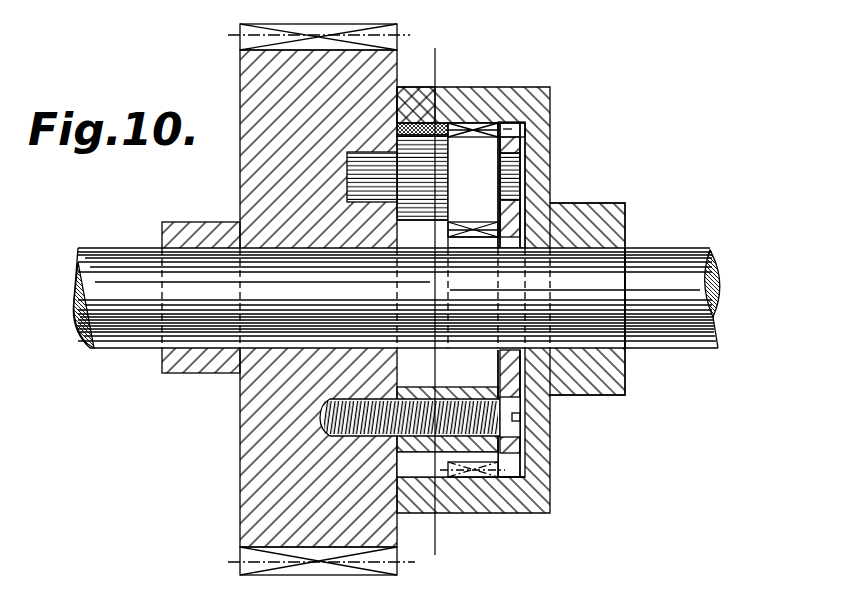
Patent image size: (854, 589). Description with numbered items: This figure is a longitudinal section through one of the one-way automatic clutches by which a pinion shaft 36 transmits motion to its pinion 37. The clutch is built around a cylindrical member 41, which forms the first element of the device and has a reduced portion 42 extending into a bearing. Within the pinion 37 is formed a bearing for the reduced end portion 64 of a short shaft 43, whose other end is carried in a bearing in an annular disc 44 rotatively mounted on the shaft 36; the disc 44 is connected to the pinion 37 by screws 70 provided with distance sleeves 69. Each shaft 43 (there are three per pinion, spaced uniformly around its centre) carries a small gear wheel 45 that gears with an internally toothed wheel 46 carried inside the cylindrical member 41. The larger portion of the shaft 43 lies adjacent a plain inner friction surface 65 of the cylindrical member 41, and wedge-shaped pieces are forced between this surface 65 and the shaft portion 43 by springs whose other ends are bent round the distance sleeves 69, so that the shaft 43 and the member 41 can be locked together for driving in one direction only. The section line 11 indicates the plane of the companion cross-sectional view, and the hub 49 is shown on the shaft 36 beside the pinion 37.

The section line 11 is at (439, 306).
The pinion shaft 36 is at (127, 258).
The pinion 37 is at (272, 24).
The cylindrical member 41 is at (535, 87).
The reduced portion 42 is at (590, 204).
The short shaft 43 is at (447, 185).
The annular disc 44 is at (518, 141).
The small gear wheel 45 is at (476, 127).
The internally toothed wheel 46 is at (474, 127).
The hub 49 is at (197, 228).
The reduced end portion 64 is at (378, 165).
The plain inner friction surface 65 is at (412, 478).
The distance sleeve 69 is at (400, 398).
The screw 70 is at (456, 398).